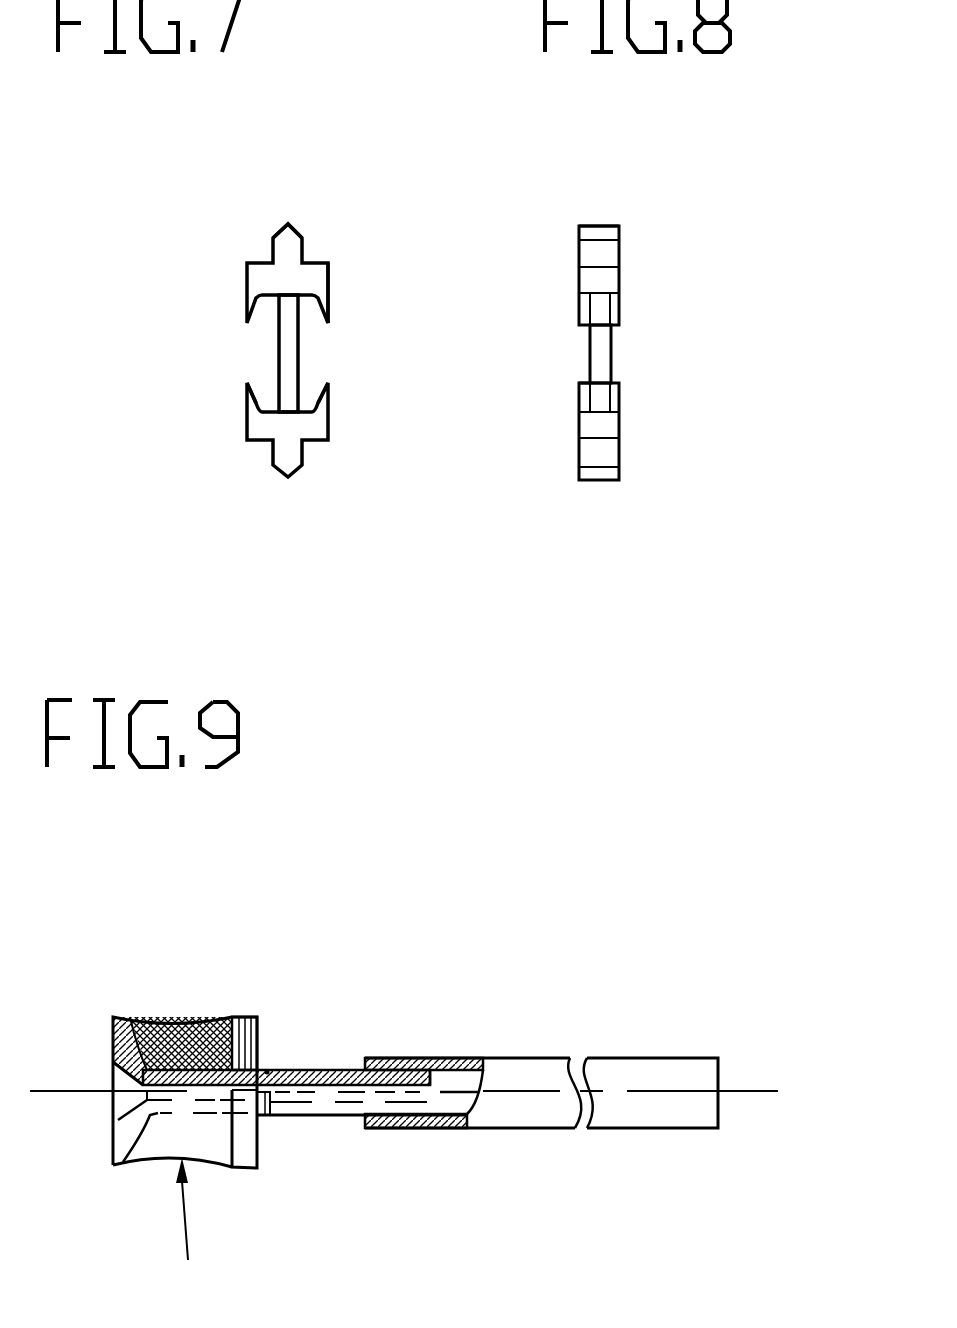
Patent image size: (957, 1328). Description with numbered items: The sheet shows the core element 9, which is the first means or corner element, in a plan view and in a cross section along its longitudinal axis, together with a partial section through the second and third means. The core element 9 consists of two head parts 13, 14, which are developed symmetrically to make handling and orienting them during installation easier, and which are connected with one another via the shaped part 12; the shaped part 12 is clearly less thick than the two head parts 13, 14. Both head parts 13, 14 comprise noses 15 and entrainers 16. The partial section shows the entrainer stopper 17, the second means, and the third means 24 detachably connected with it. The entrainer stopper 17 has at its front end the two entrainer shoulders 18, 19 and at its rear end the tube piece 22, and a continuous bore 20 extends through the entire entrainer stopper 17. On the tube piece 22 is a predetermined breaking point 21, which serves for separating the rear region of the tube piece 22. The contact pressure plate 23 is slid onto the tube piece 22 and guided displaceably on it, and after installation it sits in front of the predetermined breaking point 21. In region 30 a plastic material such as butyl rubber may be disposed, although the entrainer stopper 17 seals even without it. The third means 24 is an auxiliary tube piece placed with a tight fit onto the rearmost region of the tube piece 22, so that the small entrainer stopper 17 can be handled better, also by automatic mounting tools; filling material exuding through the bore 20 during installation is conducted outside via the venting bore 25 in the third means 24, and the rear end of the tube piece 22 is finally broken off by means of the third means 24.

In FIG. 7, the core element 9 is at (330, 268).
In FIG. 8, the core element 9 is at (580, 253).
In FIG. 7, the shaped part 12 is at (285, 350).
In FIG. 8, the shaped part 12 is at (598, 347).
In FIG. 7, the head part 13 is at (280, 278).
In FIG. 8, the head part 13 is at (608, 255).
In FIG. 7, the head part 14 is at (275, 427).
In FIG. 8, the head part 14 is at (600, 453).
In FIG. 7, the nose 15 is at (283, 233).
In FIG. 7, the entrainer 16 is at (315, 402).
In FIG. 8, the entrainer 16 is at (587, 390).
In FIG. 9, the entrainer stopper 17 is at (193, 1242).
In FIG. 9, the entrainer shoulder 18 is at (123, 1017).
In FIG. 9, the entrainer shoulder 19 is at (123, 1145).
In FIG. 9, the continuous bore 20 is at (187, 1090).
In FIG. 9, the predetermined breaking point 21 is at (268, 1071).
In FIG. 9, the tube piece 22 is at (300, 1100).
In FIG. 9, the contact pressure plate 23 is at (233, 1017).
In FIG. 9, the third means 24 is at (538, 1080).
In FIG. 9, the venting bore 25 is at (452, 1082).
In FIG. 9, the region 30 is at (197, 1125).